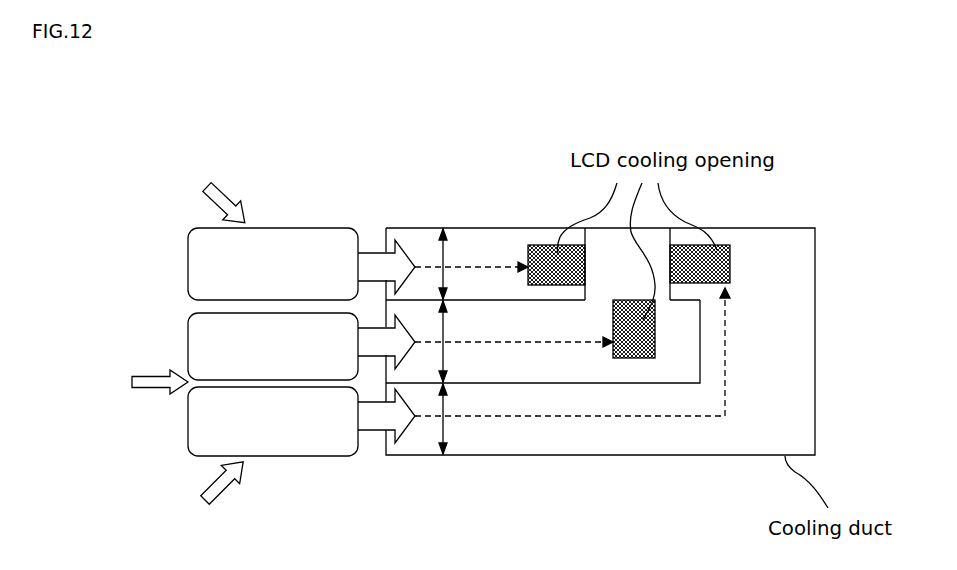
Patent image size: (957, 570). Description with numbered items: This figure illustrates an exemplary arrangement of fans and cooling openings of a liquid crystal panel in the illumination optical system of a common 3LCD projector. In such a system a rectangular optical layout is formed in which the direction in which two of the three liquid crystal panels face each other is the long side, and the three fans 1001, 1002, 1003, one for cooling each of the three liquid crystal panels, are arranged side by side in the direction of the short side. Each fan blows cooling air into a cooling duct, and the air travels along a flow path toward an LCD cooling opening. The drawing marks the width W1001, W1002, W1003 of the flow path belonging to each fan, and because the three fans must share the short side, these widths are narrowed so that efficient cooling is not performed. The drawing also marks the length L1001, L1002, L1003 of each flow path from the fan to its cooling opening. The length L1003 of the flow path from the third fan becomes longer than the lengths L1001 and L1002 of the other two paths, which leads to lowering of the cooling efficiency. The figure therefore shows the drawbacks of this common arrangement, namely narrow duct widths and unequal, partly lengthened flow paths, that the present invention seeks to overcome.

The fan 1001 is at (188, 262).
The fan 1002 is at (188, 348).
The fan 1003 is at (188, 432).
The width of the flow path W1001 is at (443, 266).
The width of the flow path W1002 is at (444, 326).
The width of the flow path W1003 is at (446, 432).
The length of the flow path L1001 is at (485, 268).
The length of the flow path L1002 is at (590, 342).
The length of the flow path L1003 is at (686, 417).